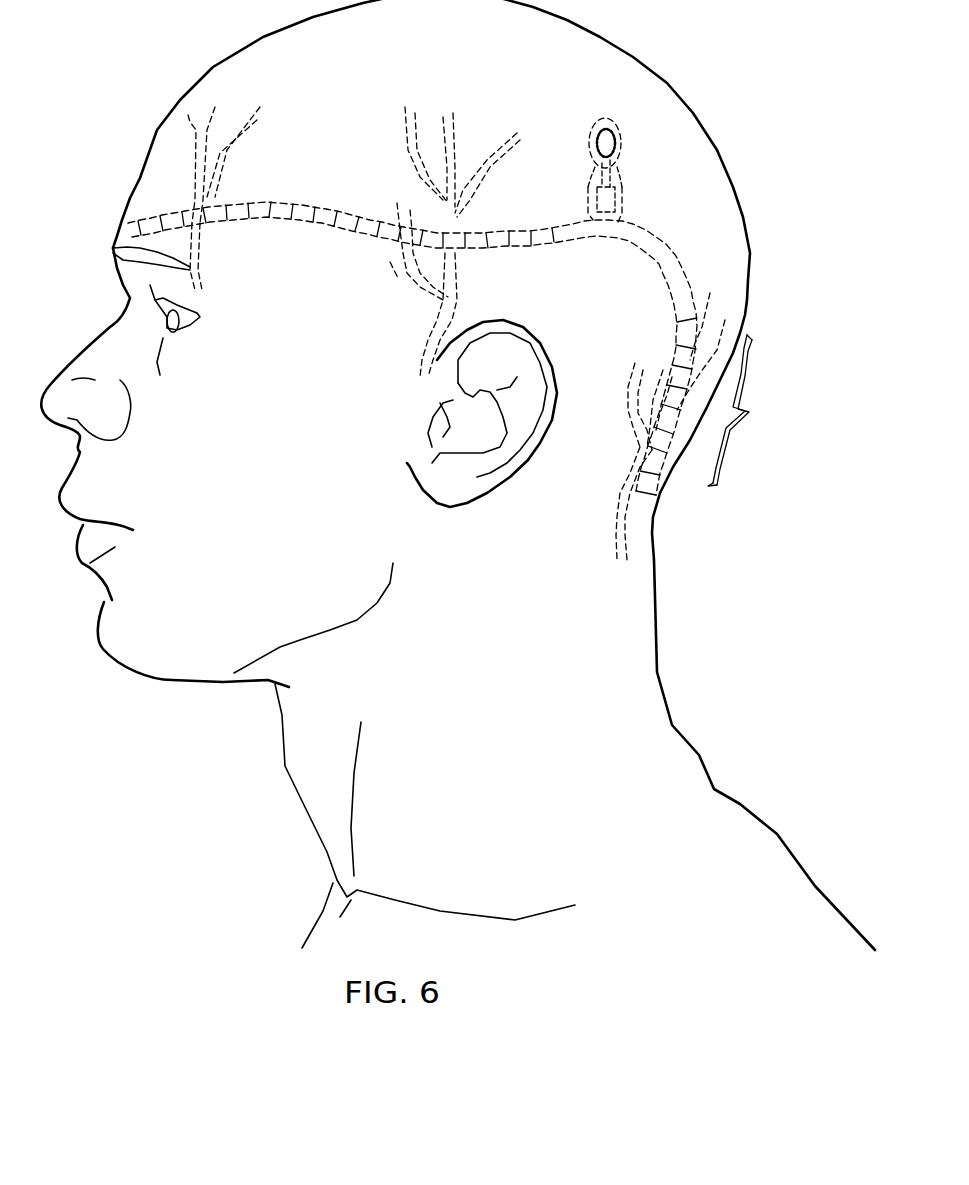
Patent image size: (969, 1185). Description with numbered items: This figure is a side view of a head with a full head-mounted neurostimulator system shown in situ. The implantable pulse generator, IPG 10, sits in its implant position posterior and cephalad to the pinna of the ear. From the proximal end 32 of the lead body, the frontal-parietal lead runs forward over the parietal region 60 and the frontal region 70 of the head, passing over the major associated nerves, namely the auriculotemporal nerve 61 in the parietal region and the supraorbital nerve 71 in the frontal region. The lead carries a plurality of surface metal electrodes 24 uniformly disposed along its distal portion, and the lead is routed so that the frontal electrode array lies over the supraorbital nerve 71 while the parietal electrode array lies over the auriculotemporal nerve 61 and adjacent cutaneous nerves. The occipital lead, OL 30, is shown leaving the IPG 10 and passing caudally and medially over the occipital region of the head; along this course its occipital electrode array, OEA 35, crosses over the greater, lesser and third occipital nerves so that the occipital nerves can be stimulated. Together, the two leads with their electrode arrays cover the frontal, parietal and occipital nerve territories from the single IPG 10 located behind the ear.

The implantable pulse generator 10 is at (617, 140).
The surface metal electrodes 24 is at (233, 233).
The occipital lead 30 is at (673, 257).
The proximal end 32 is at (630, 233).
The occipital electrode array 35 is at (743, 410).
The parietal region 60 is at (473, 137).
The auriculotemporal nerve 61 is at (453, 217).
The frontal region 70 is at (153, 117).
The supraorbital nerve 71 is at (195, 190).